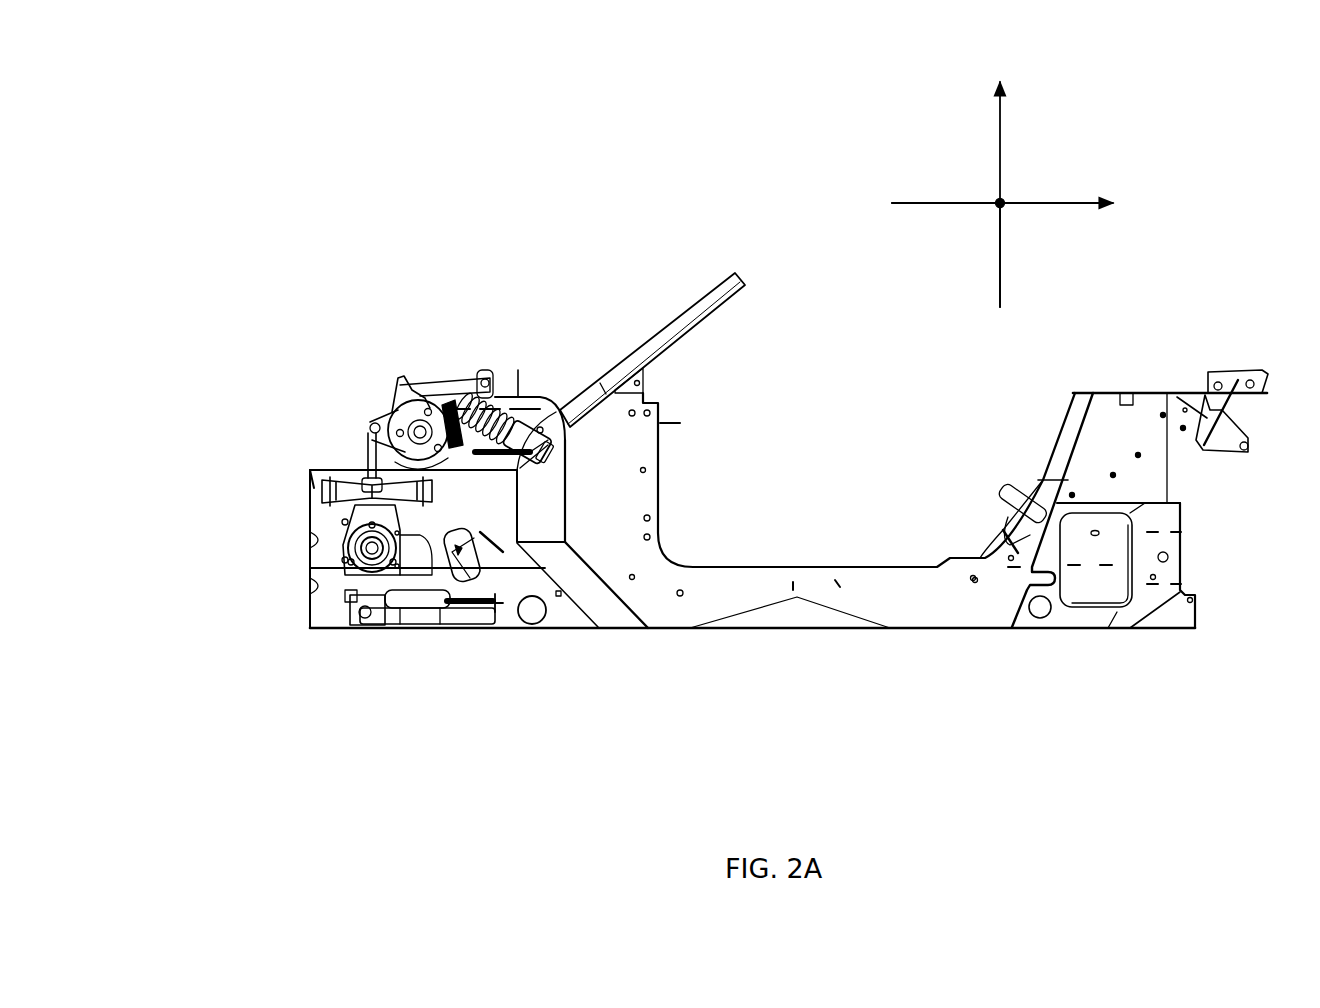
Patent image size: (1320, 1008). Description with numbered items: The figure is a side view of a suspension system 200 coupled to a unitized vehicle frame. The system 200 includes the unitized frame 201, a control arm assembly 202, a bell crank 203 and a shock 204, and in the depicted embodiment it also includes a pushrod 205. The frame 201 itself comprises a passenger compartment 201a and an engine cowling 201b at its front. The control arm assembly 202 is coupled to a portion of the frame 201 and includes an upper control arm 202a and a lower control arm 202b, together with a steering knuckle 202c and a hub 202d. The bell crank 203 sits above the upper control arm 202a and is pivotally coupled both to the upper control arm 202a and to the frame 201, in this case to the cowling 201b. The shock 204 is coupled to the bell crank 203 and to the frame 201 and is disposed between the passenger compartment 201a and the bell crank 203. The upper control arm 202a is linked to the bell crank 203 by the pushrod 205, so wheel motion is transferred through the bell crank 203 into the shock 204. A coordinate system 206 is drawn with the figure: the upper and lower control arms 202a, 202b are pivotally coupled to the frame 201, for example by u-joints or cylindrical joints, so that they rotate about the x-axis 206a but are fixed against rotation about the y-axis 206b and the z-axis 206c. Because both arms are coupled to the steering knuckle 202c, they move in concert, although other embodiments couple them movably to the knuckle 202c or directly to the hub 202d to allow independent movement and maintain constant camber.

The suspension system 200 is at (370, 124).
The unitized frame 201 is at (580, 268).
The passenger compartment 201a is at (762, 493).
The engine cowling 201b is at (455, 432).
The control arm assembly 202 is at (326, 540).
The upper control arm 202a is at (362, 474).
The lower control arm 202b is at (437, 633).
The steering knuckle 202c is at (350, 596).
The hub 202d is at (348, 563).
The bell crank 203 is at (398, 408).
The shock 204 is at (480, 378).
The pushrod 205 is at (366, 428).
The coordinate system 206 is at (830, 157).
The x-axis 206a is at (905, 205).
The y-axis 206b is at (1000, 284).
The z-axis 206c is at (1003, 203).